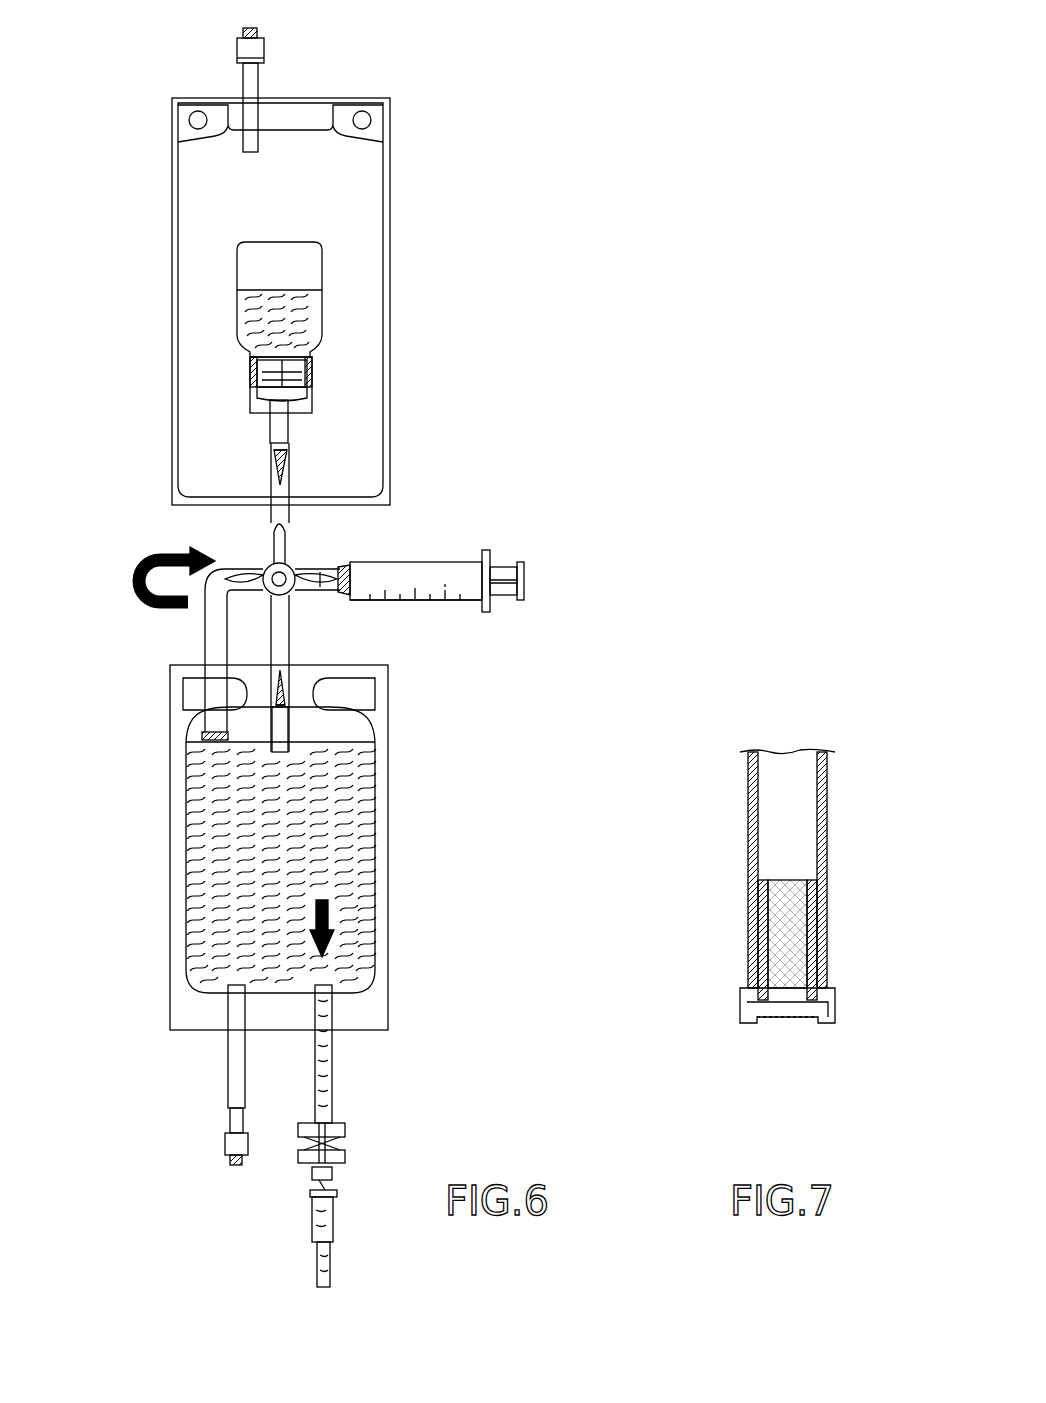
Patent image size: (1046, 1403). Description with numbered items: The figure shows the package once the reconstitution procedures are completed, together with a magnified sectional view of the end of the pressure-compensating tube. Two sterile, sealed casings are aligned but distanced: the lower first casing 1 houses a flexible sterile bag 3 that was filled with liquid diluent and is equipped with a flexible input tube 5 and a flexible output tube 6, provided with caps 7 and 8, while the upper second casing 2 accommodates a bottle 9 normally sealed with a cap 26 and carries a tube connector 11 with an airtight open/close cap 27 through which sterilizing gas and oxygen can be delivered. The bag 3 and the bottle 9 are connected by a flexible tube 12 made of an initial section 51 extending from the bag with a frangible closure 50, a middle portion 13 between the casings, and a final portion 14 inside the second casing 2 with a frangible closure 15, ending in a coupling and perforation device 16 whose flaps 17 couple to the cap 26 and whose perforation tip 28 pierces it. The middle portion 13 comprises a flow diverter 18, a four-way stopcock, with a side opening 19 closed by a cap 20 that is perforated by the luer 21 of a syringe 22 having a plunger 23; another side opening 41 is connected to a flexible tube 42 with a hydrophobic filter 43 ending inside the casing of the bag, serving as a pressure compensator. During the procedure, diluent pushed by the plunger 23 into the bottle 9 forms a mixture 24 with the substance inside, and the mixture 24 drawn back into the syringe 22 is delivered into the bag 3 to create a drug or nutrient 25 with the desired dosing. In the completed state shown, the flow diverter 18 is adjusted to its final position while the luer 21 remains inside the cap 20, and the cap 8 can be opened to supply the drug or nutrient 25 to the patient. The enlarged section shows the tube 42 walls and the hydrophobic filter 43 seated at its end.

In FIG. 6, the first casing 1 is at (390, 855).
In FIG. 6, the second casing 2 is at (395, 270).
In FIG. 6, the flexible sterile bag 3 is at (375, 760).
In FIG. 6, the flexible input tube 5 is at (237, 1090).
In FIG. 6, the flexible output tube 6 is at (325, 1085).
In FIG. 6, the cap 7 is at (235, 1143).
In FIG. 6, the cap 8 is at (330, 1140).
In FIG. 6, the bottle 9 is at (282, 262).
In FIG. 6, the tube connector 11 is at (250, 80).
In FIG. 6, the flexible tube 12 is at (270, 548).
In FIG. 6, the middle portion 13 is at (272, 640).
In FIG. 6, the final portion 14 is at (288, 455).
In FIG. 6, the frangible closure 15 is at (278, 465).
In FIG. 6, the coupling and perforation device 16 is at (320, 360).
In FIG. 6, the flaps 17 is at (256, 368).
In FIG. 6, the flow diverter 18 is at (292, 598).
In FIG. 6, the side opening 19 is at (323, 576).
In FIG. 6, the cap 20 is at (370, 598).
In FIG. 6, the luer 21 is at (350, 570).
In FIG. 6, the syringe 22 is at (420, 560).
In FIG. 6, the plunger 23 is at (505, 568).
In FIG. 6, the mixture 24 is at (248, 312).
In FIG. 6, the drug or nutrient 25 is at (275, 845).
In FIG. 6, the cap 26 is at (290, 377).
In FIG. 6, the airtight open/close cap 27 is at (255, 48).
In FIG. 6, the perforation tip 28 is at (268, 385).
In FIG. 6, the side opening 41 is at (258, 568).
In FIG. 6, the flexible tube 42 is at (205, 620).
In FIG. 7, the flexible tube 42 is at (752, 872).
In FIG. 6, the hydrophobic filter 43 is at (212, 737).
In FIG. 7, the hydrophobic filter 43 is at (785, 945).
In FIG. 6, the frangible closure 50 is at (285, 688).
In FIG. 6, the initial section 51 is at (292, 730).